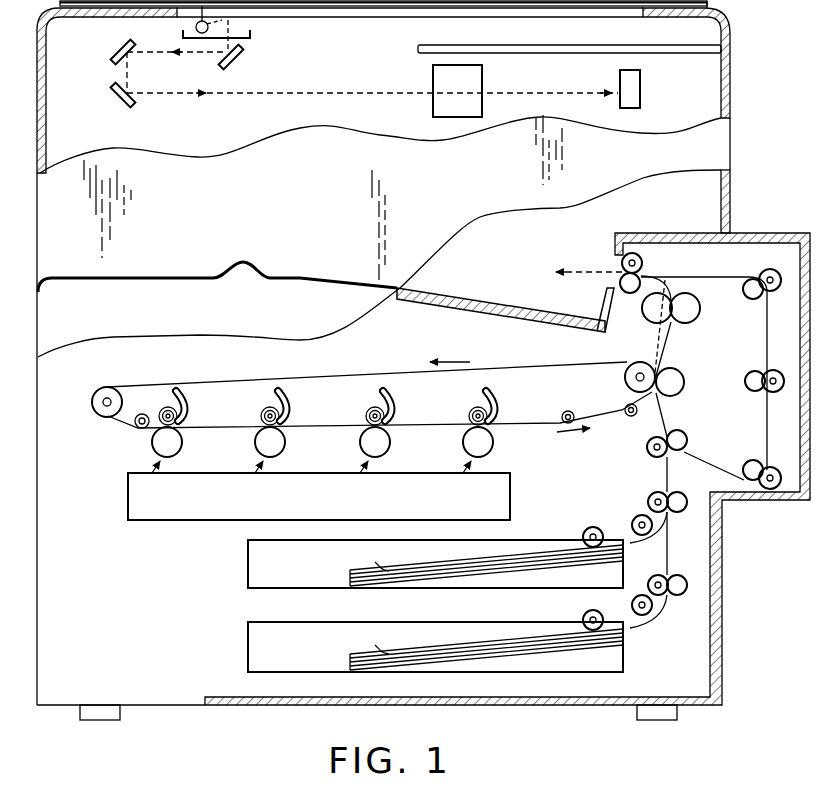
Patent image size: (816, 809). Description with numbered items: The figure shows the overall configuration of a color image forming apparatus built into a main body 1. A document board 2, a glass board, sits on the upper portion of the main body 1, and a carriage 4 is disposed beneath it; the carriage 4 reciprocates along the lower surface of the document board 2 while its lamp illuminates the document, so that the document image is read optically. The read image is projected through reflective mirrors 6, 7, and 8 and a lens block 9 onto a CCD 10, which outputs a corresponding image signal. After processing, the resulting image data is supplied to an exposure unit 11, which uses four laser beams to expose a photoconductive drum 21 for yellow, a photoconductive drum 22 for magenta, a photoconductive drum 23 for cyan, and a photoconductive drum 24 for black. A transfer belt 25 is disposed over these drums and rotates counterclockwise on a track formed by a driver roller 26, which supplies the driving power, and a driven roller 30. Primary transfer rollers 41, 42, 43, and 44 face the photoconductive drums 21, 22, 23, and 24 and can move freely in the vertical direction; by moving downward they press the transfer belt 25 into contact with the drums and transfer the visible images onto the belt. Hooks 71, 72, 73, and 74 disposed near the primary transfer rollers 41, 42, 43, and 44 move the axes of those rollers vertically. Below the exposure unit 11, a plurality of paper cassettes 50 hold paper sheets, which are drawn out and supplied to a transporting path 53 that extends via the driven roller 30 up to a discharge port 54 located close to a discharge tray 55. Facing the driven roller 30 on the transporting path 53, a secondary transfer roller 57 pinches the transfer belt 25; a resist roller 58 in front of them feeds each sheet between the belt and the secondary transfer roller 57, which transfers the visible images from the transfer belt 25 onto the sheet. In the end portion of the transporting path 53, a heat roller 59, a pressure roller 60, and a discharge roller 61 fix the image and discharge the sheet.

The main body 1 is at (731, 87).
The document board 2 is at (397, 17).
The carriage 4 is at (252, 36).
The reflective mirror 6 is at (244, 60).
The reflective mirror 7 is at (113, 46).
The reflective mirror 8 is at (113, 104).
The lens block 9 is at (484, 76).
The CCD 10 is at (642, 83).
The exposure unit 11 is at (128, 504).
The photoconductive drum 21 is at (183, 442).
The photoconductive drum 22 is at (286, 442).
The photoconductive drum 23 is at (391, 442).
The photoconductive drum 24 is at (494, 442).
The transfer belt 25 is at (371, 376).
The driver roller 26 is at (99, 387).
The driven roller 30 is at (642, 361).
The primary transfer roller 41 is at (190, 385).
The primary transfer roller 42 is at (278, 405).
The primary transfer roller 43 is at (387, 404).
The primary transfer roller 44 is at (492, 402).
The paper cassette 50 is at (246, 577).
The transporting path 53 is at (663, 412).
The discharge port 54 is at (614, 263).
The discharge tray 55 is at (325, 275).
The secondary transfer roller 57 is at (684, 368).
The resist roller 58 is at (647, 447).
The heat roller 59 is at (640, 307).
The pressure roller 60 is at (701, 308).
The discharge roller 61 is at (643, 262).
The hook 71 is at (188, 412).
The hook 72 is at (291, 411).
The hook 73 is at (398, 411).
The hook 74 is at (501, 408).